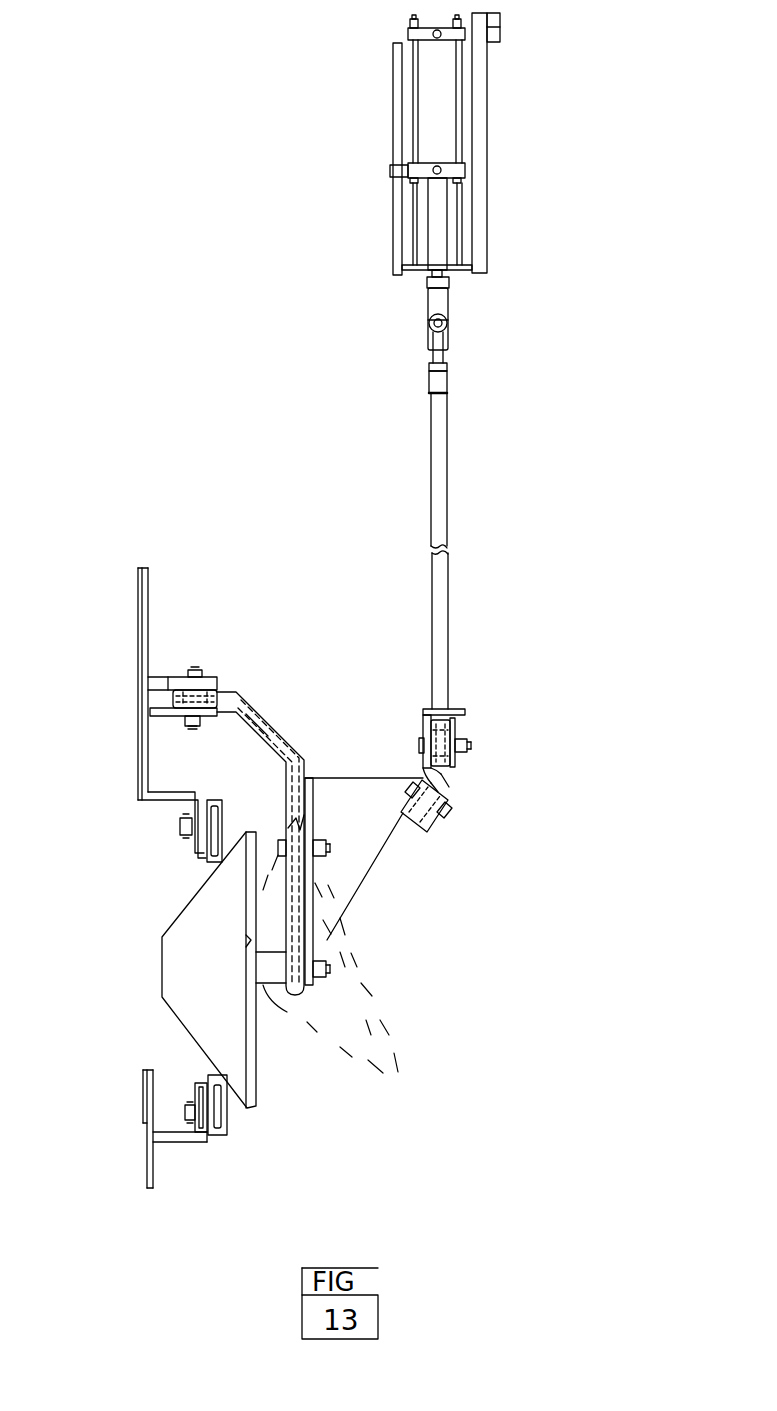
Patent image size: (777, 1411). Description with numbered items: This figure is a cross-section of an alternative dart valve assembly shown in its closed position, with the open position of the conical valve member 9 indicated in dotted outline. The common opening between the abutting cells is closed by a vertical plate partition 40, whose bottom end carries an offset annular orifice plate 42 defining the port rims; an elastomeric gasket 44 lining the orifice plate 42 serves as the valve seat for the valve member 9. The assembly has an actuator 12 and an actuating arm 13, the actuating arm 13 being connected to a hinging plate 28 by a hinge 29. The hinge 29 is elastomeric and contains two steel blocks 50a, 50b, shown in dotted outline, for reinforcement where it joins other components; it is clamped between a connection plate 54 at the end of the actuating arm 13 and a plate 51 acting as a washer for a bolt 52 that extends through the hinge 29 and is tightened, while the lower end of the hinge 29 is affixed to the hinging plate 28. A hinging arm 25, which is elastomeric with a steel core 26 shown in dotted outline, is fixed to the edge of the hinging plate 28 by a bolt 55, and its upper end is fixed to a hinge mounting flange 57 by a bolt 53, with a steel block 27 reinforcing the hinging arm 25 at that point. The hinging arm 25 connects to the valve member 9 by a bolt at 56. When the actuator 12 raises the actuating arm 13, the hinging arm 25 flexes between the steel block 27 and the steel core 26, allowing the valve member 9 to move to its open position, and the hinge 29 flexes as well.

The valve member 9 is at (250, 1067).
The actuator 12 is at (445, 138).
The actuating arm 13 is at (445, 635).
The hinging arm 25 is at (272, 723).
The steel core 26 is at (293, 753).
The steel block 27 is at (210, 695).
The hinging plate 28 is at (367, 857).
The hinge 29 is at (452, 780).
The partition 40 is at (138, 748).
The orifice plate 42 is at (202, 1143).
The gasket 44 is at (223, 1128).
The steel block 50a is at (413, 830).
The steel block 50b is at (443, 731).
The plate 51 is at (454, 766).
The bolt 52 is at (469, 746).
The bolt 53 is at (192, 670).
The connection plate 54 is at (423, 711).
The bolt 55 is at (321, 857).
The bolt 56 is at (327, 975).
The hinge mounting flange 57 is at (168, 678).